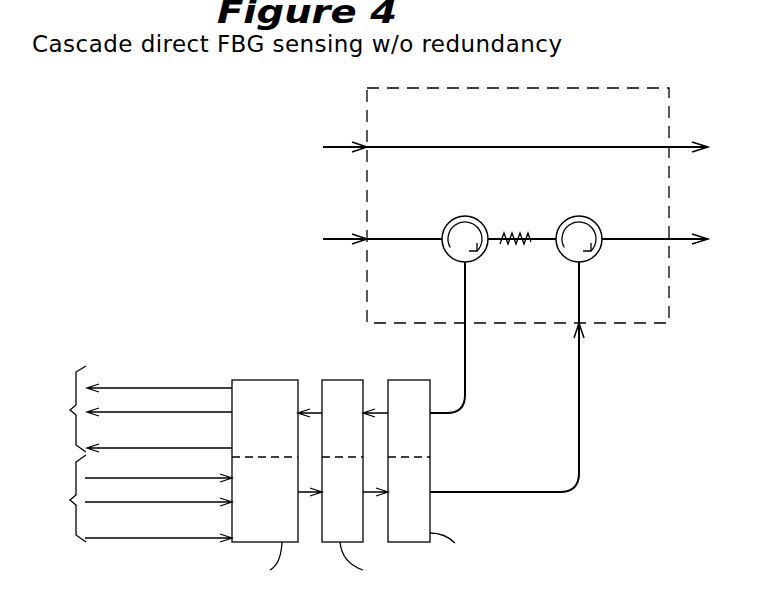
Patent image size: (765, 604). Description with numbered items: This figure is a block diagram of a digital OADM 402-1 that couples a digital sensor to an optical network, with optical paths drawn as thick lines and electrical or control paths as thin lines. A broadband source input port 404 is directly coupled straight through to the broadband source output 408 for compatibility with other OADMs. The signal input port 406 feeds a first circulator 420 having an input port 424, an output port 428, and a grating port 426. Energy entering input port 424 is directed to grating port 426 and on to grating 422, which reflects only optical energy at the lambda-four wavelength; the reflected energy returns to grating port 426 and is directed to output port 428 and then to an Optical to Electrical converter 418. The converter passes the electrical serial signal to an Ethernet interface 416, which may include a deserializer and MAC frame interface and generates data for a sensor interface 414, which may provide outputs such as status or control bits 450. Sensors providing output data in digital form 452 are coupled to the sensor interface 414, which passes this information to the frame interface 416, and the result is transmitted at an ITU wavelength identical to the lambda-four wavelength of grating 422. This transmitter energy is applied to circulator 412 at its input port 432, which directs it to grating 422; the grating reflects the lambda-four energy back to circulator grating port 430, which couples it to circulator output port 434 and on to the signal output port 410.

The digital OADM 402-1 is at (518, 192).
The broadband source input port 404 is at (338, 129).
The signal input port 406 is at (338, 219).
The broadband source output 408 is at (694, 124).
The signal output port 410 is at (695, 215).
The circulator 412 is at (579, 225).
The sensor interface 414 is at (187, 468).
The Ethernet interface 416 is at (456, 469).
The Optical to Electrical converter 418 is at (554, 454).
The first circulator 420 is at (465, 225).
The grating 422 is at (519, 213).
The input port 424 is at (431, 244).
The grating port 426 is at (493, 244).
The output port 428 is at (470, 272).
The circulator grating port 430 is at (551, 244).
The input port 432 is at (582, 278).
The circulator output port 434 is at (612, 243).
The status or control bits 450 is at (131, 407).
The sensors providing output data in digital form 452 is at (131, 498).